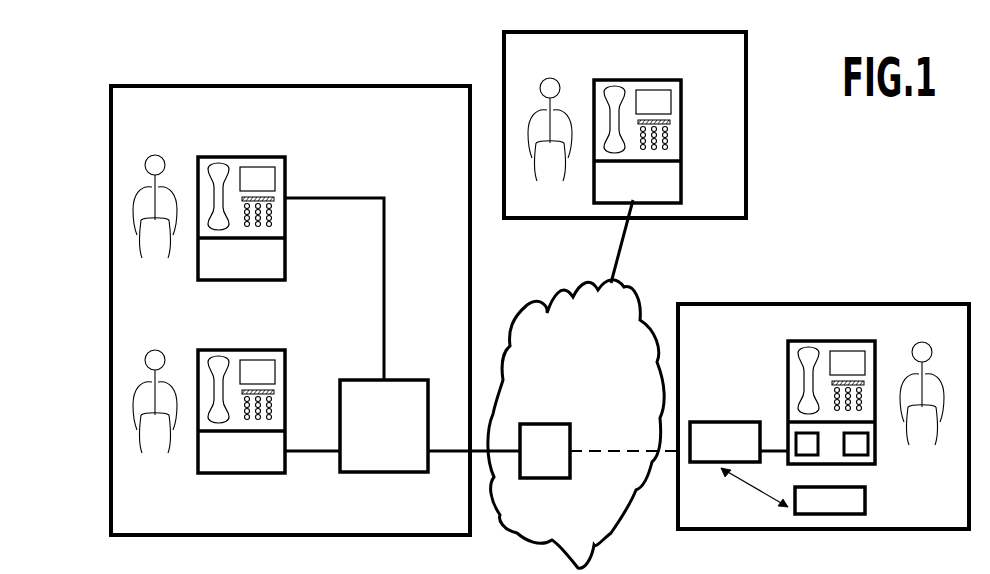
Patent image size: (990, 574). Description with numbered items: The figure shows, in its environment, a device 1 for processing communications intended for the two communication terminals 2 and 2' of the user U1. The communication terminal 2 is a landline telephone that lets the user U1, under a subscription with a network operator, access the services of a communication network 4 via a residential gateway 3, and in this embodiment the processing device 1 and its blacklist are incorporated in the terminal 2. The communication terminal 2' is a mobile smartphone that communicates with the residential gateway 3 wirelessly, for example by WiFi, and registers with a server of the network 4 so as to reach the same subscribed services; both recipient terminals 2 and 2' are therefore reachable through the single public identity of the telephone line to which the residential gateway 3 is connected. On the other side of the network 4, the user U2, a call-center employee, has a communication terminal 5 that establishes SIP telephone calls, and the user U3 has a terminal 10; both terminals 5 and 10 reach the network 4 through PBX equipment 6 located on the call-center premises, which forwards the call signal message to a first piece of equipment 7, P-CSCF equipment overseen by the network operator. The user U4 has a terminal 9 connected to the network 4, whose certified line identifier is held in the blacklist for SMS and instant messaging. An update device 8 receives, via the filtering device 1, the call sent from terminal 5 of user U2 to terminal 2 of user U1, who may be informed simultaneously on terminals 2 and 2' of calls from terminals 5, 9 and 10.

The device for processing communications 1 is at (808, 450).
The communication terminal 2 is at (831, 386).
The communication terminal (mobile smartphone) 2' is at (851, 504).
The residential gateway 3 is at (712, 426).
The communication network 4 is at (630, 296).
The communication terminal 5 is at (286, 160).
The PBX equipment 6 is at (410, 386).
The first piece of equipment 7 is at (545, 432).
The update device 8 is at (866, 462).
The terminal 9 is at (681, 83).
The terminal 10 is at (285, 352).
The user U1 is at (923, 354).
The user U2 is at (156, 168).
The user U3 is at (156, 362).
The user U4 is at (551, 90).